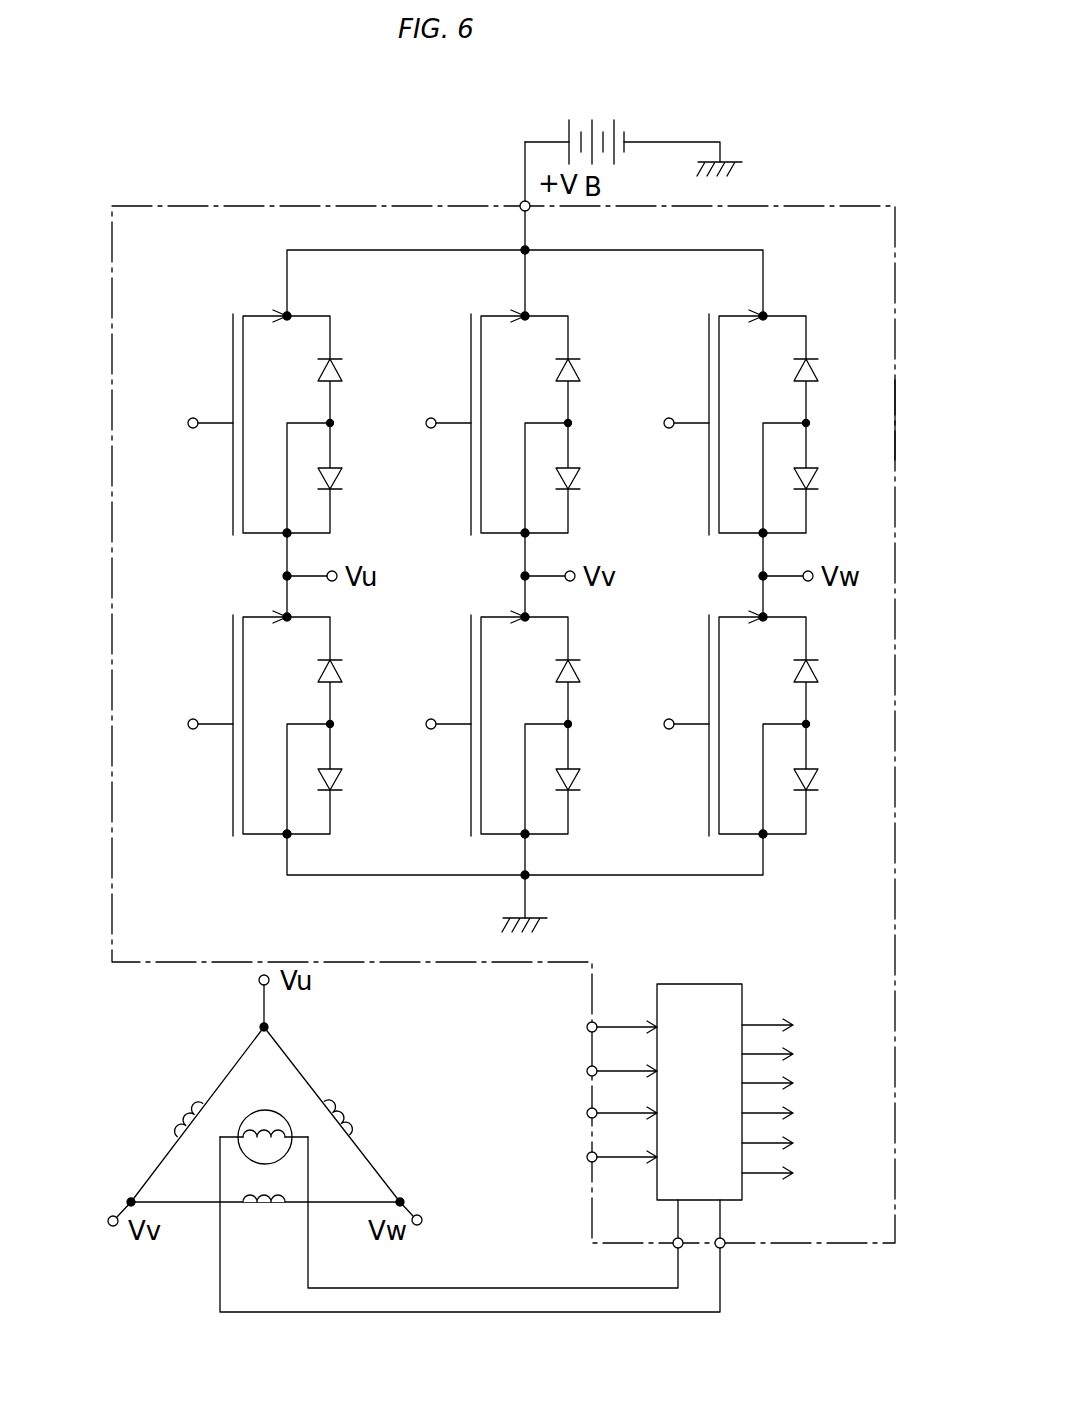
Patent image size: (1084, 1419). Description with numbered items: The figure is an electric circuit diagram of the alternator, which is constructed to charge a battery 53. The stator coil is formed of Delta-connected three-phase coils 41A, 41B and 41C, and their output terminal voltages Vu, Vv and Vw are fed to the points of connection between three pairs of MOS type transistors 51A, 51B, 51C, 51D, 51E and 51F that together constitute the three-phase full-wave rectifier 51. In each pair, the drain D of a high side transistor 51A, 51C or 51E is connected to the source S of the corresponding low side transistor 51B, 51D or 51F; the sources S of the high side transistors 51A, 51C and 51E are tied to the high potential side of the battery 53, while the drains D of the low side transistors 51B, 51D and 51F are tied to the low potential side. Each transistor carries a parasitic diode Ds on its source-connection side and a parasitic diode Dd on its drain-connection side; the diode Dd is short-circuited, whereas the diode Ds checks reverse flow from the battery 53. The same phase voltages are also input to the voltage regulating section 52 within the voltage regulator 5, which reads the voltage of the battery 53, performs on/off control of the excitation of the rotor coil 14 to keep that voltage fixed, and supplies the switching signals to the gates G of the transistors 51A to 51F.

The voltage regulator 5 is at (895, 418).
The rotor coil 14 is at (260, 1132).
The three-phase coil 41A is at (186, 1112).
The three-phase coil 41B is at (253, 1216).
The three-phase coil 41C is at (348, 1106).
The three-phase full-wave rectifier 51 is at (831, 250).
The MOS type transistor 51A is at (283, 428).
The MOS type transistor 51B is at (278, 729).
The MOS type transistor 51C is at (521, 428).
The MOS type transistor 51D is at (516, 729).
The MOS type transistor 51E is at (759, 428).
The MOS type transistor 51F is at (754, 729).
The voltage regulating section 52 is at (687, 982).
The battery 53 is at (566, 114).
The parasitic diode Ds is at (359, 389).
The parasitic diode Dd is at (361, 499).